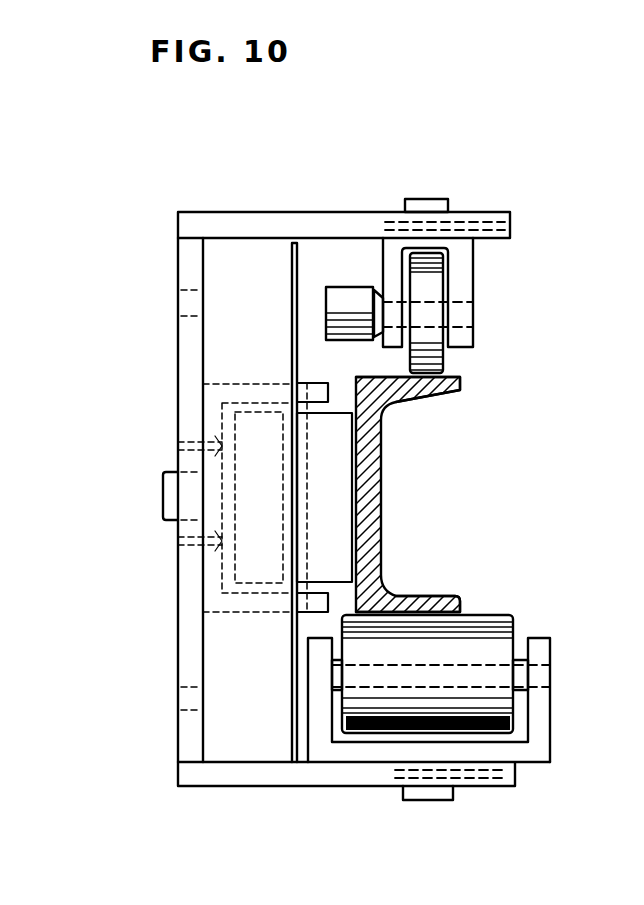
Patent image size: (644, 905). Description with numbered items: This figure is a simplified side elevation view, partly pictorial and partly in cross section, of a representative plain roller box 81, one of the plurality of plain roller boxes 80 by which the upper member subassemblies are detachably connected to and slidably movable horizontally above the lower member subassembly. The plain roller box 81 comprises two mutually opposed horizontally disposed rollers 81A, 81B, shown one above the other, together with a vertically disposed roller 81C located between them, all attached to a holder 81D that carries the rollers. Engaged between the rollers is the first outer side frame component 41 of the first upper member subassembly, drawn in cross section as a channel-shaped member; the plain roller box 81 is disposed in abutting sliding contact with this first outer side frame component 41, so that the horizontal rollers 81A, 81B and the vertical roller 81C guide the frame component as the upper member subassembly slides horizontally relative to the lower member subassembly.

The plurality of plain roller boxes 80 is at (332, 186).
The first plain roller box 81 is at (222, 212).
The horizontally disposed roller 81A is at (438, 395).
The horizontally disposed roller 81B is at (490, 623).
The vertically disposed roller 81C is at (328, 430).
The holder 81D is at (183, 751).
The first outer side frame component 41 is at (386, 600).